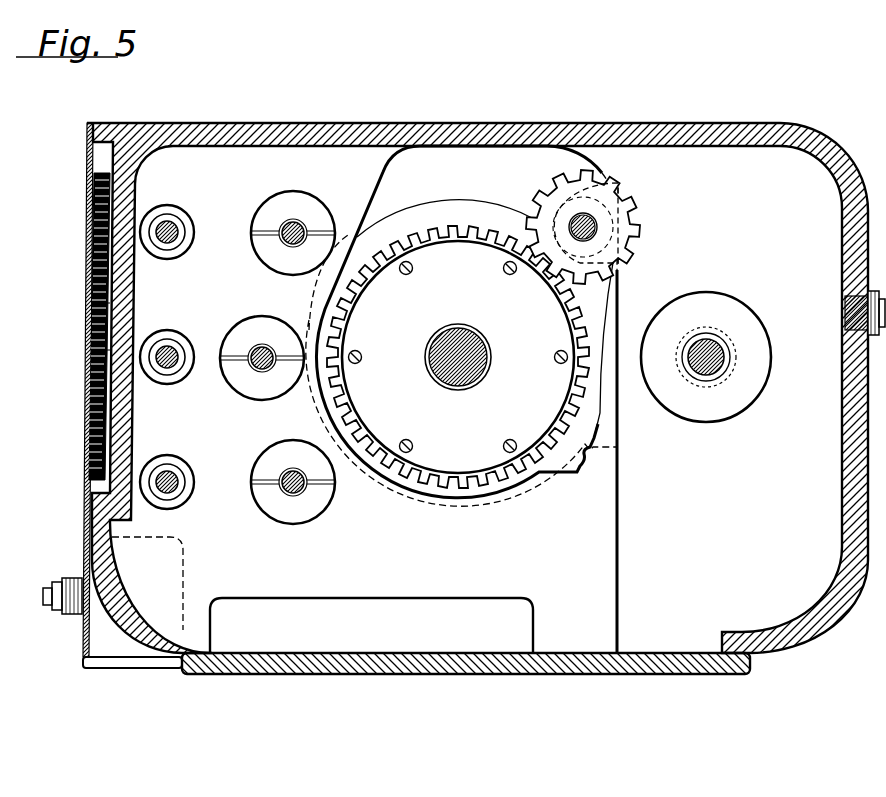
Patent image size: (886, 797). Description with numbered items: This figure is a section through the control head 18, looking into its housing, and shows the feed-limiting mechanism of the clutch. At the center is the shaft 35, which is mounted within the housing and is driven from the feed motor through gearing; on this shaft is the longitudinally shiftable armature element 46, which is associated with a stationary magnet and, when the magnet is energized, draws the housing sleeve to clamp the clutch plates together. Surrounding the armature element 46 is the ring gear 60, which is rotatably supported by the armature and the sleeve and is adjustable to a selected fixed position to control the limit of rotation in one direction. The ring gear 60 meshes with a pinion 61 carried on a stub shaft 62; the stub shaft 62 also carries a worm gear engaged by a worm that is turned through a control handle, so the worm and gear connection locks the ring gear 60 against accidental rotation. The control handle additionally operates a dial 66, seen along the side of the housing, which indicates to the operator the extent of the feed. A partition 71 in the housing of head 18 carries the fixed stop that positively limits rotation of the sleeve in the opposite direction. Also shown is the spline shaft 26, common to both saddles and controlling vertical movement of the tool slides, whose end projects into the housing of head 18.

The head 18 is at (583, 122).
The spline shaft 26 is at (255, 351).
The shaft 35 is at (462, 348).
The armature element 46 is at (431, 257).
The ring gear 60 is at (393, 247).
The pinion 61 is at (634, 200).
The stub shaft 62 is at (597, 228).
The dial 66 is at (87, 250).
The partition 71 is at (404, 158).